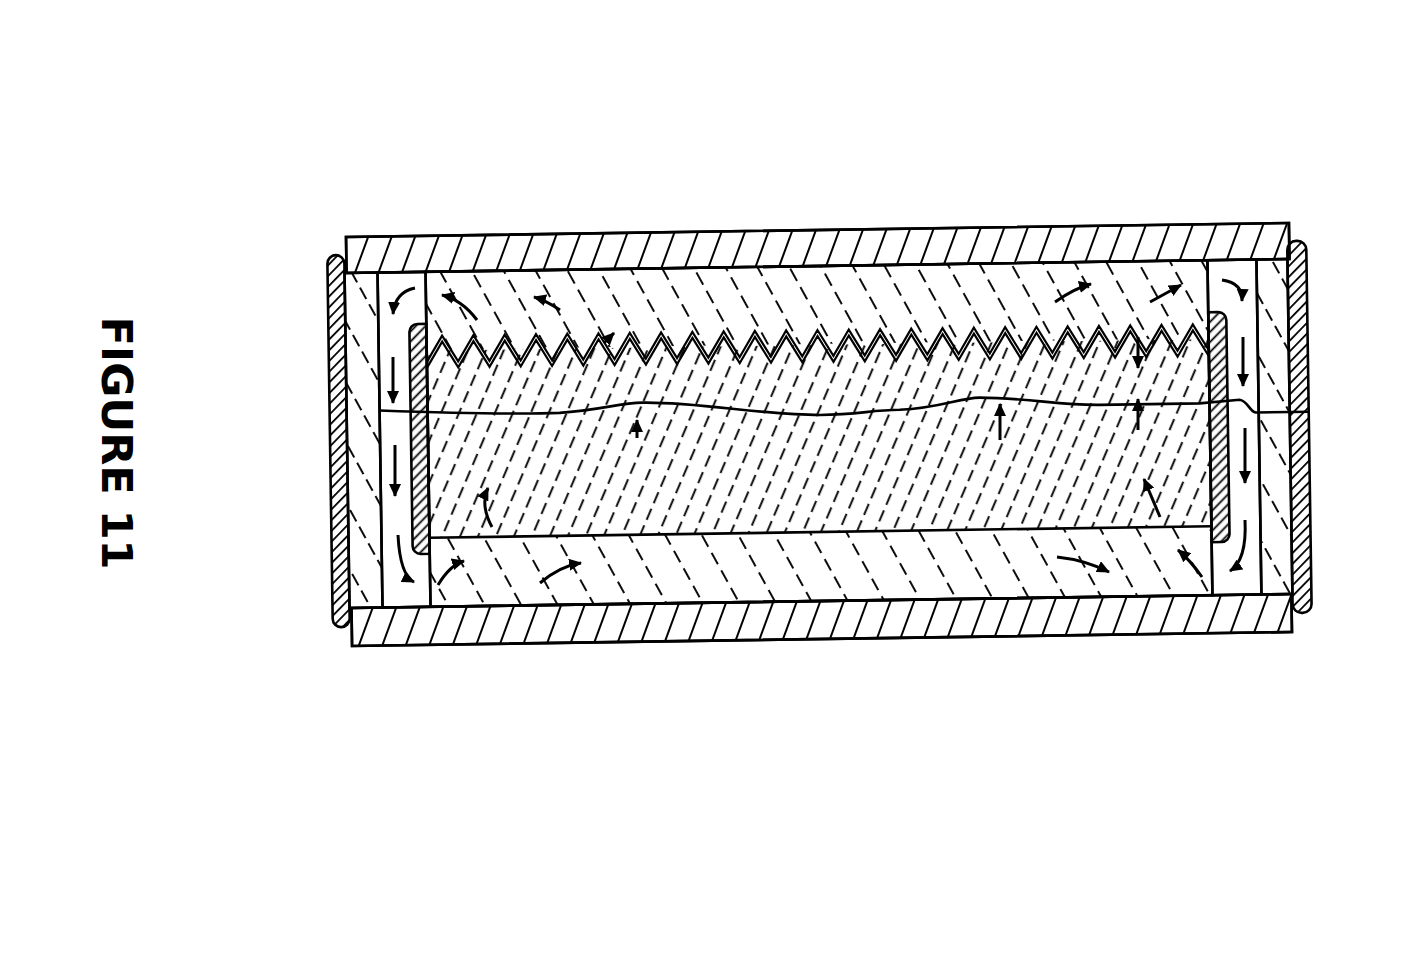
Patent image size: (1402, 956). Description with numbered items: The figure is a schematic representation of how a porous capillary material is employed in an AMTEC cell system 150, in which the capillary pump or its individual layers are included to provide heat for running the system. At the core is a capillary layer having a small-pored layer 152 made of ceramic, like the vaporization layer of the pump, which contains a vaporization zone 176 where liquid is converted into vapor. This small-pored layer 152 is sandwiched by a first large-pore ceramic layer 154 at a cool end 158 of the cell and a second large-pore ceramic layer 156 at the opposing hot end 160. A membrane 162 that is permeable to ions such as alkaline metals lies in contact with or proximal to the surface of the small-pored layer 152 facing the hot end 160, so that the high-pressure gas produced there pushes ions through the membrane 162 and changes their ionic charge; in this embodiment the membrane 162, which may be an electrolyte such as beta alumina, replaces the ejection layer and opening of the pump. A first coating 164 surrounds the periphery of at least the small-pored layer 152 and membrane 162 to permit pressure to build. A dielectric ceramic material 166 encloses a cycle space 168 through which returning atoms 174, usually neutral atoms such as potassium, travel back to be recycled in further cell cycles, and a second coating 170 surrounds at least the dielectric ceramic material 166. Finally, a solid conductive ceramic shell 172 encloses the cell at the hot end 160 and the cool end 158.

The AMTEC cell system 150 is at (298, 148).
The small-pored layer 152 is at (687, 507).
The first large-pore ceramic layer 154 is at (1032, 568).
The second large-pore ceramic layer 156 is at (1018, 302).
The cool end 158 is at (900, 637).
The hot end 160 is at (722, 231).
The membrane 162 is at (893, 333).
The first coating 164 is at (405, 426).
The dielectric ceramic material 166 is at (1310, 318).
The cycle space 168 is at (1237, 268).
The second coating 170 is at (330, 316).
The solid conductive ceramic shell 172 is at (479, 236).
The returning atoms 174 is at (380, 471).
The vaporization zone 176 is at (1309, 413).